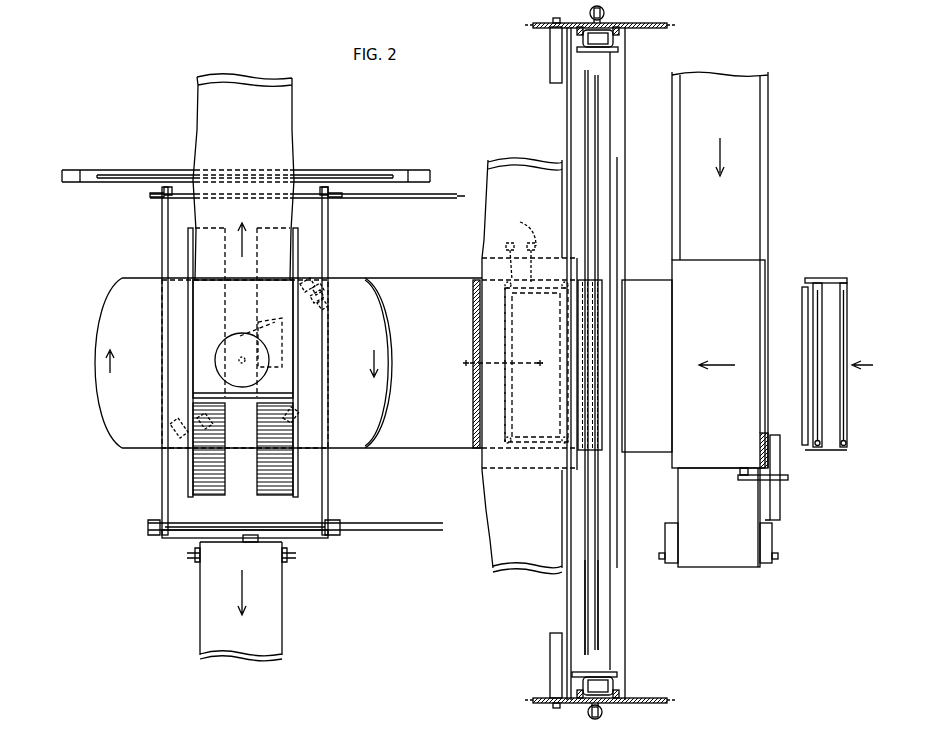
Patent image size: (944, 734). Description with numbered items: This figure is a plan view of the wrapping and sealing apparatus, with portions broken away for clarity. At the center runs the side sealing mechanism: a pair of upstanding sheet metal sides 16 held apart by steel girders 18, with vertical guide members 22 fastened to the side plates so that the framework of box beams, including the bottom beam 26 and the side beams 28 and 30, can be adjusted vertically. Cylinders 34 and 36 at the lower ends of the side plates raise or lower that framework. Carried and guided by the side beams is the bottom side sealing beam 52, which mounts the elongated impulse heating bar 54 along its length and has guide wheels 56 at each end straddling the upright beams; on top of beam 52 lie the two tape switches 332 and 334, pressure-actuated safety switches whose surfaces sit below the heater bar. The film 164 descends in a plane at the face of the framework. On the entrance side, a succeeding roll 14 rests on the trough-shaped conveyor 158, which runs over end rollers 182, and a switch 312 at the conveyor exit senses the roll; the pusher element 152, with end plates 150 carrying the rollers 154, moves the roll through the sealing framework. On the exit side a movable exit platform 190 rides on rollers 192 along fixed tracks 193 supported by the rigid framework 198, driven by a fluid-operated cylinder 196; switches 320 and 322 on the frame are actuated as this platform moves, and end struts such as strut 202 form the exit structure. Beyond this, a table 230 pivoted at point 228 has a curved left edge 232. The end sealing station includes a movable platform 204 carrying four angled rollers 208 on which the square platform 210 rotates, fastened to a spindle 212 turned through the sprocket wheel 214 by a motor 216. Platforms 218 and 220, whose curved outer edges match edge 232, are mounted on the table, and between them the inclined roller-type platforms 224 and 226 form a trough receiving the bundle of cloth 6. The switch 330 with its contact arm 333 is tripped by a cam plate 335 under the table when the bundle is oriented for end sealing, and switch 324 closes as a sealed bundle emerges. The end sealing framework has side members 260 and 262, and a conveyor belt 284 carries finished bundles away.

The bundle of cloth 6 is at (291, 211).
The succeeding roll 14 is at (726, 297).
The sheet metal sides 16 is at (537, 28).
The steel girders 18 is at (550, 58).
The vertical guide members 22 is at (614, 36).
The bottom beam 26 is at (626, 96).
The side beam 28 is at (600, 672).
The side beam 30 is at (605, 52).
The cylinder 34 is at (603, 713).
The cylinder 36 is at (590, 12).
The bottom side sealing beam 52 is at (611, 632).
The heating bar 54 is at (586, 586).
The guide wheels 56 is at (614, 46).
The end plates 150 is at (822, 278).
The pusher element 152 is at (823, 268).
The rollers 154 is at (803, 331).
The conveyor 158 is at (735, 113).
The film 164 is at (617, 208).
The rollers 182 is at (760, 568).
The exit platform 190 is at (553, 406).
The rollers 192 is at (561, 446).
The fixed tracks 193 is at (506, 330).
The fluid-operated cylinder 196 is at (500, 362).
The framework 198 is at (381, 529).
The end strut 202 is at (302, 538).
The movable platform 204 is at (161, 488).
The rollers 208 is at (202, 292).
The square platform 210 is at (329, 347).
The spindle 212 is at (240, 362).
The sprocket wheel 214 is at (218, 358).
The motor 216 is at (283, 330).
The platform 218 is at (145, 324).
The platform 220 is at (371, 381).
The inclined roller-type platform 224 is at (197, 497).
The inclined roller-type platform 226 is at (267, 497).
The pivot point 228 is at (473, 392).
The table 230 is at (441, 433).
The left edge 232 is at (388, 322).
The side member 260 is at (74, 172).
The side member 262 is at (414, 171).
The conveyor belt 284 is at (274, 640).
The switch 312 is at (748, 481).
The switch 320 is at (516, 243).
The switch 322 is at (516, 236).
The switch 324 is at (240, 545).
The switch 330 is at (330, 285).
The tape switch 332 is at (599, 606).
The contact arm 333 is at (324, 292).
The tape switch 334 is at (599, 128).
The cam plate 335 is at (168, 430).